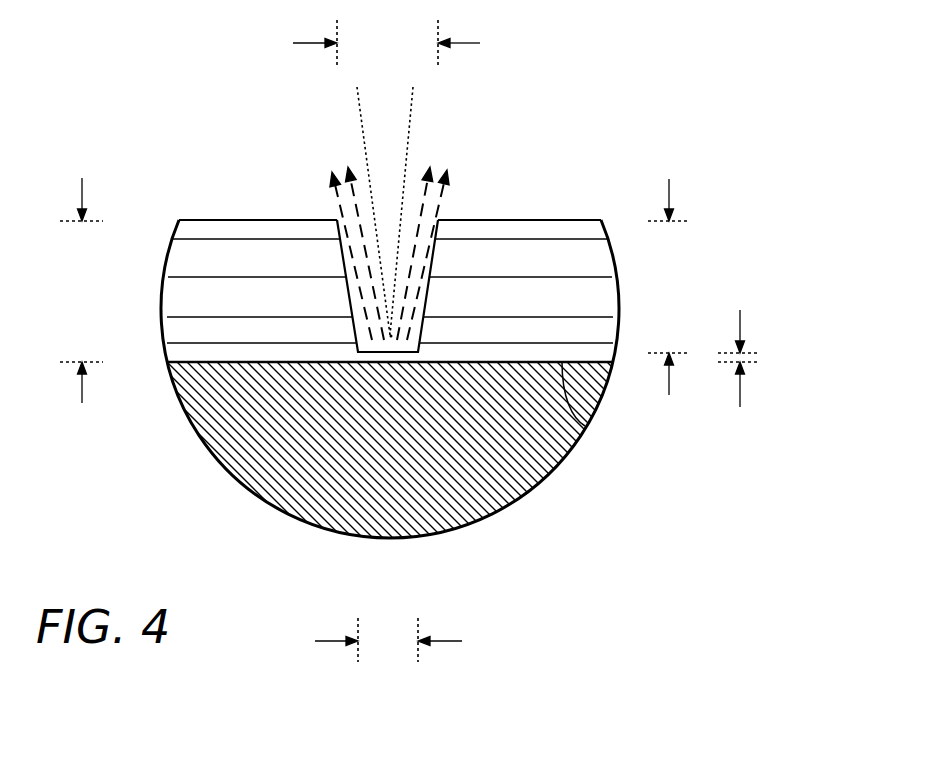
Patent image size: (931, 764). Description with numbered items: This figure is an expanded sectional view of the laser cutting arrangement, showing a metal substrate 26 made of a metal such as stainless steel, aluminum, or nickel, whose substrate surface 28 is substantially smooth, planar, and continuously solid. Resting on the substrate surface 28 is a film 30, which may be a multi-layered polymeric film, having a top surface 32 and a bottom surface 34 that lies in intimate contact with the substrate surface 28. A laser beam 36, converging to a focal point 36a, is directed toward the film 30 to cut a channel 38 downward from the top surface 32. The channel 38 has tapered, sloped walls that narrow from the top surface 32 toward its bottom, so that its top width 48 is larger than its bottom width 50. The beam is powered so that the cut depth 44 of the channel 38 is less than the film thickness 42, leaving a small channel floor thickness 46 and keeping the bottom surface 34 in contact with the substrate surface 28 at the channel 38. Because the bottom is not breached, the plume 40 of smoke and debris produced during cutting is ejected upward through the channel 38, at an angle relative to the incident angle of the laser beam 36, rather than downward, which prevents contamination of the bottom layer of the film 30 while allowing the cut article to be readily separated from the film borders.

The metal substrate 26 is at (250, 444).
The substrate surface 28 is at (205, 361).
The film 30 is at (600, 262).
The top surface 32 is at (535, 220).
The bottom surface 34 is at (580, 428).
The laser beam 36 is at (414, 95).
The focal point 36a is at (404, 332).
The channel 38 is at (340, 263).
The plume 40 is at (467, 167).
The film thickness 42 is at (82, 190).
The cut depth 44 is at (669, 190).
The channel floor thickness 46 is at (740, 322).
The top width 48 is at (470, 43).
The bottom width 50 is at (452, 641).